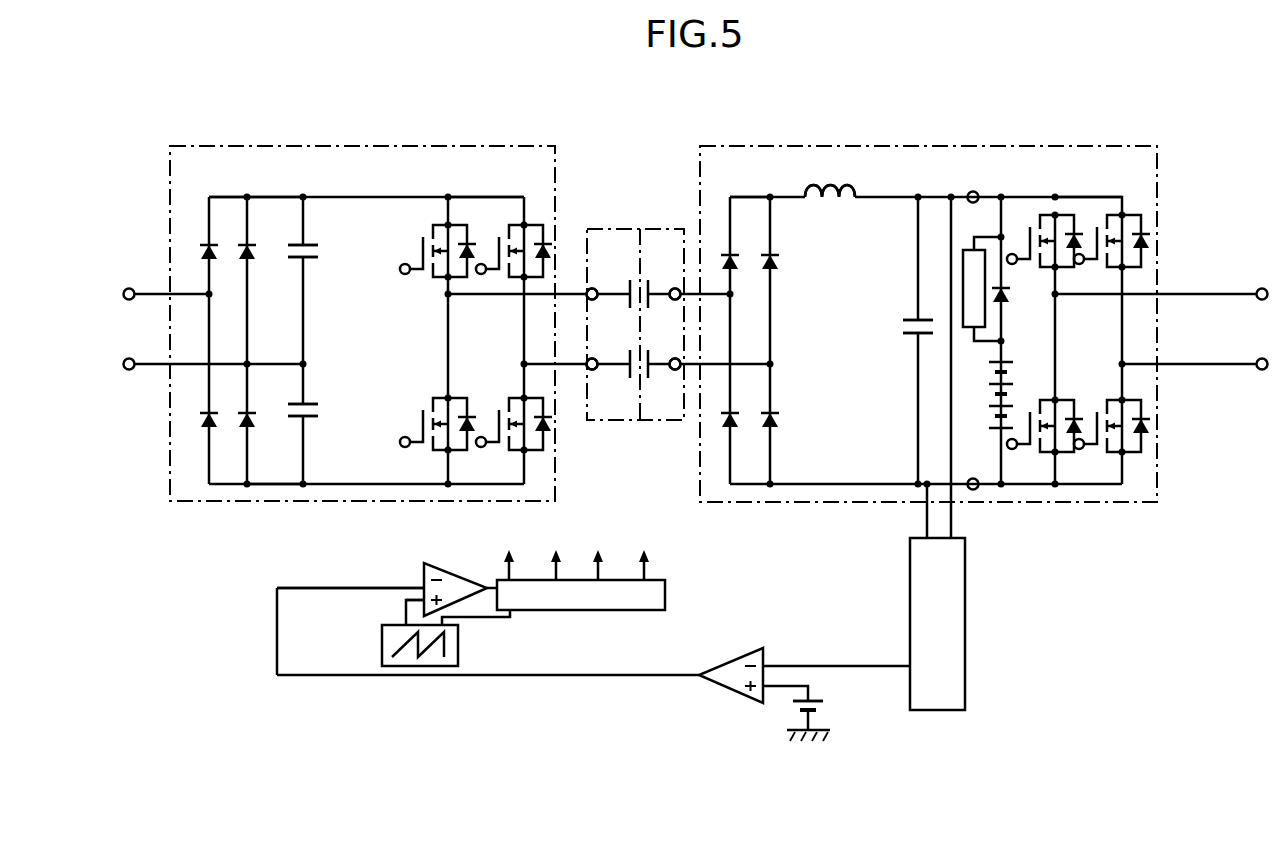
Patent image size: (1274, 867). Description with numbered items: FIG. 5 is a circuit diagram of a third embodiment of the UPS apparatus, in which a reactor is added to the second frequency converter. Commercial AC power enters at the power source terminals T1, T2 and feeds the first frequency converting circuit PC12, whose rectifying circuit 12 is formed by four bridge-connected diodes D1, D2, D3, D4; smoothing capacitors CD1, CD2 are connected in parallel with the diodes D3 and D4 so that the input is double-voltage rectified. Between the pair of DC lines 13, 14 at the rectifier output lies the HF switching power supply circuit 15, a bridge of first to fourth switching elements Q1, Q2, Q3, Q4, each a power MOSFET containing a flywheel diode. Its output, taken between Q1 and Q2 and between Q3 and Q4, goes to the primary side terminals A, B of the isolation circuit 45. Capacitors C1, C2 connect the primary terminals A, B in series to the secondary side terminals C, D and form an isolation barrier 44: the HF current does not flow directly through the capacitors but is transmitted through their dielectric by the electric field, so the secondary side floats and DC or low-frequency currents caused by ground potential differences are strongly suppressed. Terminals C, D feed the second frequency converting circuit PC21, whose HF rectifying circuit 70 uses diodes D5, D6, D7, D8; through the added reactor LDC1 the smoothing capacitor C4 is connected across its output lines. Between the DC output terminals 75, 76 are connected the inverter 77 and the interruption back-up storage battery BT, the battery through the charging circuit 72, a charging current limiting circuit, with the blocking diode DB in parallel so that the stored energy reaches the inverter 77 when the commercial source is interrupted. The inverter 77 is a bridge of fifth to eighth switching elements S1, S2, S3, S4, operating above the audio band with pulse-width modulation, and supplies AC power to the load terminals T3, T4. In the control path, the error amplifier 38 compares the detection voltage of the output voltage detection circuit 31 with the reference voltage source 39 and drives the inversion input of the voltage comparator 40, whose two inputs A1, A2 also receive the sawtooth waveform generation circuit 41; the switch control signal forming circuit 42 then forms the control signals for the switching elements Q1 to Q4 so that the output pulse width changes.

The rectifying circuit 12 is at (229, 197).
The DC line 13 is at (277, 196).
The DC line 14 is at (270, 483).
The HF switching power supply circuit 15 is at (496, 196).
The output voltage detection circuit 31 is at (910, 592).
The error amplifier 38 is at (728, 688).
The reference voltage source 39 is at (823, 712).
The voltage comparator 40 is at (455, 574).
The sawtooth waveform generation circuit 41 is at (458, 652).
The switch control signal forming circuit 42 is at (665, 600).
The isolation barrier 44 is at (634, 305).
The isolation circuit 45 is at (640, 229).
The HF rectifying circuit 70 is at (748, 197).
The charging circuit 72 is at (972, 250).
The DC output terminal 75 is at (977, 192).
The DC output terminal 76 is at (971, 478).
The inverter 77 is at (1096, 197).
The first frequency converting circuit PC12 is at (555, 467).
The second frequency converting circuit PC21 is at (700, 488).
The commercial AC power source terminal T1 is at (131, 288).
The commercial AC power source terminal T2 is at (127, 358).
The load terminal T3 is at (1262, 288).
The load terminal T4 is at (1257, 360).
The diode D1 is at (213, 250).
The diode D2 is at (212, 412).
The diode D3 is at (246, 262).
The diode D4 is at (246, 430).
The diode D5 is at (735, 254).
The diode D6 is at (734, 412).
The diode D7 is at (769, 272).
The diode D8 is at (769, 432).
The smoothing capacitor CD1 is at (313, 258).
The smoothing capacitor CD2 is at (318, 402).
The first switching element Q1 is at (409, 274).
The second switching element Q2 is at (420, 404).
The third switching element Q3 is at (496, 252).
The fourth switching element Q4 is at (496, 404).
The capacitor C1 is at (630, 300).
The capacitor C2 is at (630, 358).
The primary side terminal A is at (596, 288).
The primary side terminal B is at (596, 371).
The secondary side terminal C is at (672, 288).
The secondary side terminal D is at (672, 371).
The reactor LDC1 is at (827, 223).
The smoothing capacitor C4 is at (922, 340).
The blocking diode DB is at (1006, 308).
The storage battery BT is at (990, 364).
The fifth switching element S1 is at (1017, 264).
The sixth switching element S2 is at (1043, 405).
The seventh switching element S3 is at (1096, 256).
The eighth switching element S4 is at (1103, 405).
The comparator input A1 is at (409, 586).
The comparator input A2 is at (404, 606).